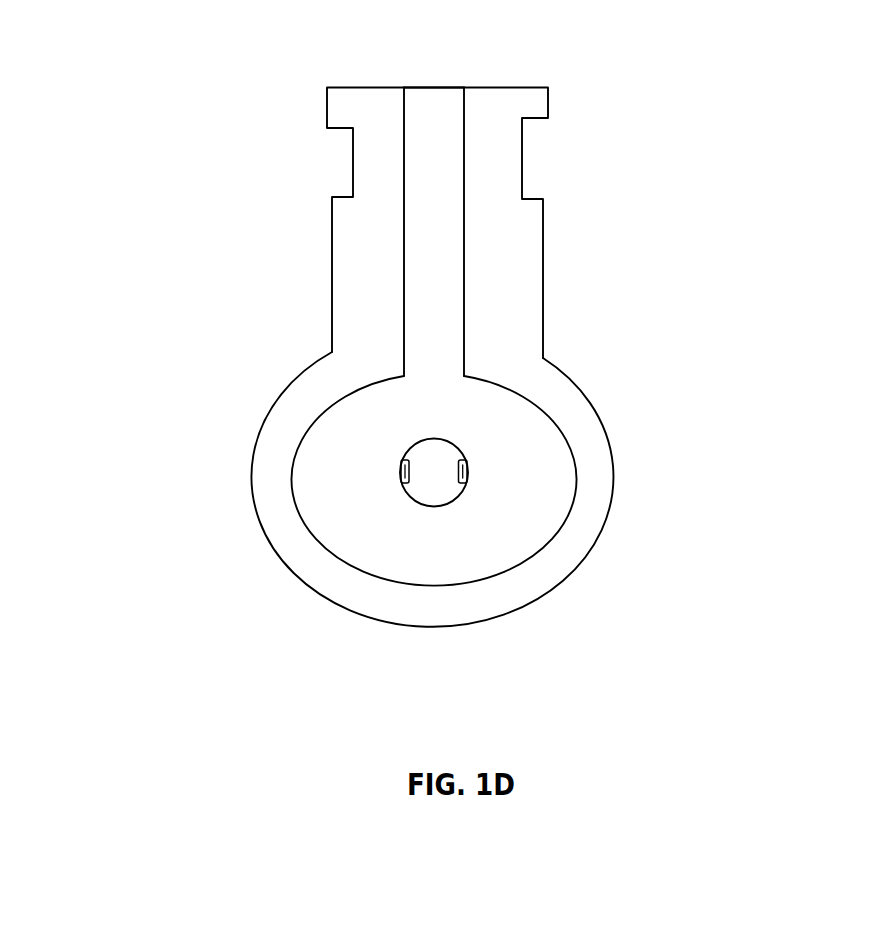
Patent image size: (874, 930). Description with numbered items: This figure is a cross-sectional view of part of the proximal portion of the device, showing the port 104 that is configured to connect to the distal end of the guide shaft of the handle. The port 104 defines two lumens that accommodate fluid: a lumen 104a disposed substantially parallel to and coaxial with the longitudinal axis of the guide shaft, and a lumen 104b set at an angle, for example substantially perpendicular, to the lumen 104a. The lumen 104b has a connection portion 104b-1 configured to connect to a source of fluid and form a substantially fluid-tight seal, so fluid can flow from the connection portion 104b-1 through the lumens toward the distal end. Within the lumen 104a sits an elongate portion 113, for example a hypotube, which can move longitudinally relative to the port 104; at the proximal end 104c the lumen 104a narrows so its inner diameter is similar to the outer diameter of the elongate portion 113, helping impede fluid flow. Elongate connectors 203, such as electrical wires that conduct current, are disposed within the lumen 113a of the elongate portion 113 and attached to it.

The port 104 is at (617, 337).
The lumen 104a is at (327, 453).
The lumen 104b is at (437, 270).
The connection portion 104b-1 is at (430, 115).
The proximal end 104c is at (553, 477).
The elongate portion 113 is at (435, 507).
The lumen 113a is at (443, 478).
The elongate connectors 203 is at (464, 460).